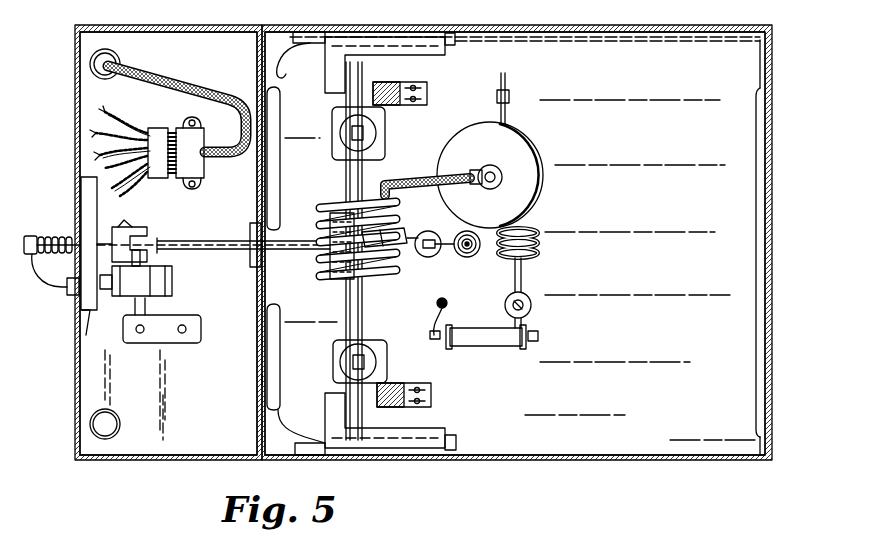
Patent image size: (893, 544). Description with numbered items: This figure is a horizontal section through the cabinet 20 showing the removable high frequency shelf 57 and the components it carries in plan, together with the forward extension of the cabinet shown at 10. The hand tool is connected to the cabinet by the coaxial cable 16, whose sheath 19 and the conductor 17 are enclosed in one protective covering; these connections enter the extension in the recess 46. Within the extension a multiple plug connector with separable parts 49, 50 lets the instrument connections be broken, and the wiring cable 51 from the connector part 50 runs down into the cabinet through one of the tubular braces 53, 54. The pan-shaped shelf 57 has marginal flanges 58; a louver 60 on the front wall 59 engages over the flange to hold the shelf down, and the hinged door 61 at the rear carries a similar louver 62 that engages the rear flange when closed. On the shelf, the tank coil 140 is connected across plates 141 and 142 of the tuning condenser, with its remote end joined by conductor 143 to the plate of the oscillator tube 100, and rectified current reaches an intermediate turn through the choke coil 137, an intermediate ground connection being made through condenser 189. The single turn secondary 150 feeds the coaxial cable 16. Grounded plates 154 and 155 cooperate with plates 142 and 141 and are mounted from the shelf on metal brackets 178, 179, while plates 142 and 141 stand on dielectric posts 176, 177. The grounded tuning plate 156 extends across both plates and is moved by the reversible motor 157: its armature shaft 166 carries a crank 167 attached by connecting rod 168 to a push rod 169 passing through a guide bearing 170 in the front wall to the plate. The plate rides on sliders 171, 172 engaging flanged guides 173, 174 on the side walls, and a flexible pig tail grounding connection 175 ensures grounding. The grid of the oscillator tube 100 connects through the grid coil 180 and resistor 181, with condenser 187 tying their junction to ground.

The housing 10 is at (241, 25).
The cabinet 20 is at (641, 25).
The coaxial cable 16 is at (55, 236).
The conductor 17 is at (60, 290).
The sheath 19 is at (31, 236).
The recess 46 is at (80, 333).
The separable part of multiple plug connector 49 is at (158, 178).
The separable part of multiple plug connector 50 is at (207, 176).
The wiring cable 51 is at (193, 98).
The tubular brace 53 is at (120, 54).
The tubular brace 54 is at (120, 426).
The top shelf 57 is at (650, 432).
The marginal flange 58 is at (549, 455).
The front wall 59 is at (266, 382).
The louver 60 is at (276, 140).
The hinged door 61 is at (768, 68).
The louver 62 is at (759, 158).
The oscillator tube 100 is at (543, 180).
The choke coil 137 is at (402, 232).
The tank coil 140 is at (382, 272).
The tuning condenser plate 141 is at (367, 317).
The tuning condenser plate 142 is at (382, 175).
The conductor 143 is at (432, 172).
The single turn secondary 150 is at (390, 252).
The grounded plate 154 is at (389, 148).
The grounded plate 155 is at (380, 343).
The tuning plate 156 is at (345, 160).
The motor 157 is at (172, 285).
The armature shaft 166 is at (150, 263).
The crank 167 is at (150, 241).
The connecting rod 168 is at (195, 240).
The push rod 169 is at (250, 262).
The guide bearing 170 is at (262, 275).
The slider 171 is at (412, 53).
The slider 172 is at (405, 440).
The guide 173 is at (450, 32).
The guide 174 is at (457, 452).
The flexible pig tail grounding connection 175 is at (307, 78).
The dielectric post 176 is at (366, 136).
The dielectric post 177 is at (370, 362).
The metal bracket 178 is at (427, 93).
The metal bracket 179 is at (431, 396).
The grid coil 180 is at (538, 236).
The resistor 181 is at (490, 345).
The condenser 187 is at (531, 308).
The condenser 189 is at (436, 240).